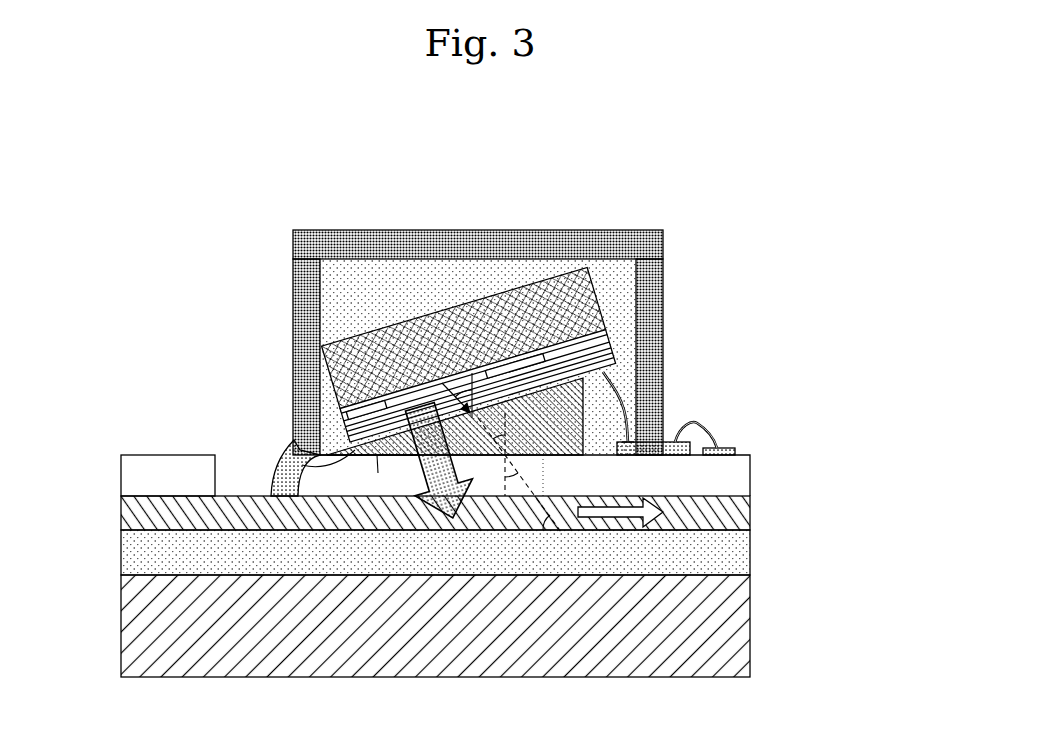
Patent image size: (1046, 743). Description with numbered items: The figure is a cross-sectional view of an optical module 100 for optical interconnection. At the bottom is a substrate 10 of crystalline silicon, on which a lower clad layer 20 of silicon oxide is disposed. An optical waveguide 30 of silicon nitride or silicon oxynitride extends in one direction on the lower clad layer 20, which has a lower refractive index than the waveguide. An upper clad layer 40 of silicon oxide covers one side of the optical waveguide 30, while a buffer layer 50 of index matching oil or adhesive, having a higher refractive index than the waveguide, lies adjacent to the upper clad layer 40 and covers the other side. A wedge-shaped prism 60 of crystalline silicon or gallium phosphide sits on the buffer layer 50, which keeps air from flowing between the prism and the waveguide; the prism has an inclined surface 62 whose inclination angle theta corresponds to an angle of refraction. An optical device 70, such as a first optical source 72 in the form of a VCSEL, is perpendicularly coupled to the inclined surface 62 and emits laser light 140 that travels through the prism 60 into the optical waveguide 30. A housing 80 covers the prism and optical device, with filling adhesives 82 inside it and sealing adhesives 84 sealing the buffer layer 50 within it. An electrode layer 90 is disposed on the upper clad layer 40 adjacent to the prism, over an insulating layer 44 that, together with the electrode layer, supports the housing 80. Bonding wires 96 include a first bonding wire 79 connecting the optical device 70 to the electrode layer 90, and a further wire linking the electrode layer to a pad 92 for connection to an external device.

The substrate 10 is at (750, 637).
The lower clad layer 20 is at (750, 548).
The optical waveguide 30 is at (750, 514).
The upper clad layer 40 is at (750, 481).
The insulating layer 44 is at (667, 455).
The buffer layer 50 is at (313, 477).
The prism 60 is at (565, 443).
The inclined surface 62 is at (297, 443).
The optical device 70 is at (566, 482).
The first optical source 72 is at (612, 376).
The first bonding wire 79 is at (622, 400).
The housing 80 is at (597, 240).
The filling adhesives 82 is at (412, 285).
The sealing adhesives 84 is at (282, 485).
The electrode layer 90 is at (631, 448).
The pad 92 is at (735, 447).
The bonding wires 96 is at (682, 420).
The optical module 100 is at (743, 119).
The laser light 140 is at (432, 527).